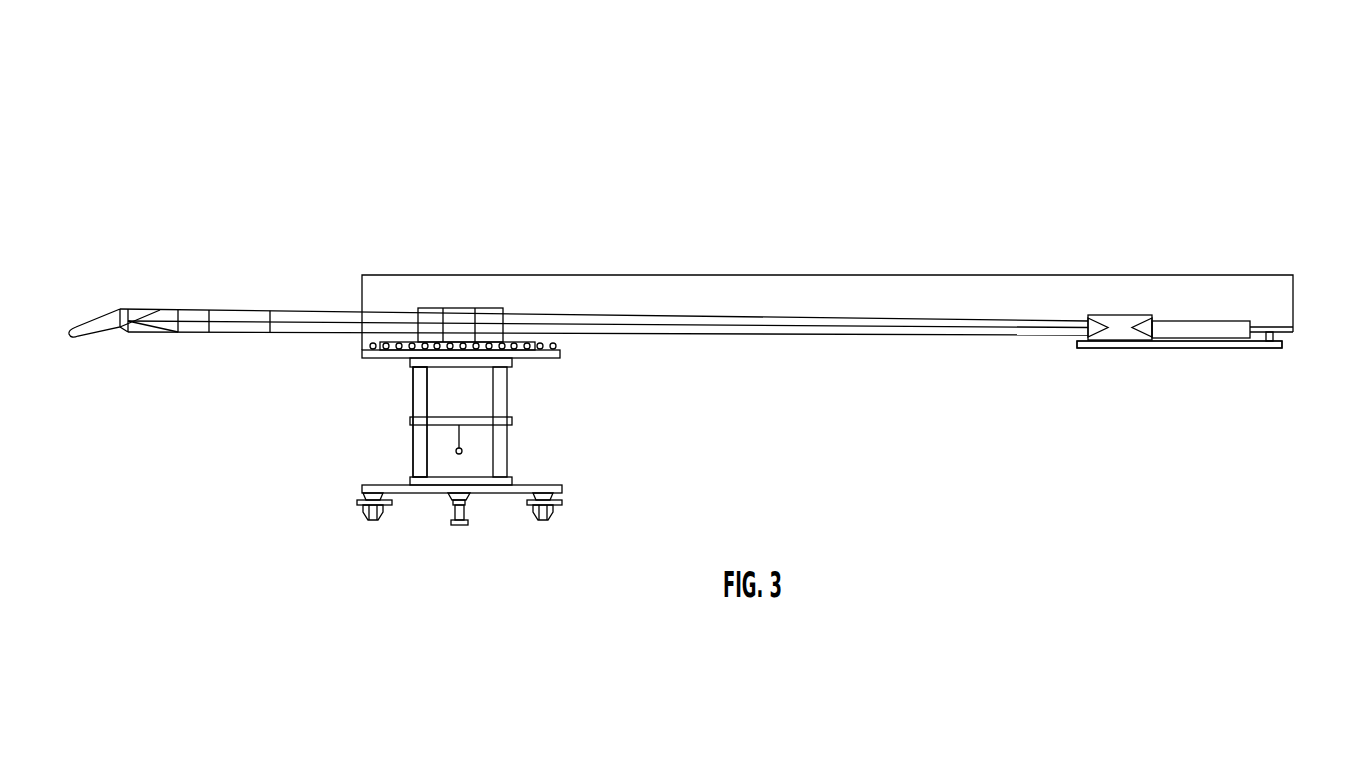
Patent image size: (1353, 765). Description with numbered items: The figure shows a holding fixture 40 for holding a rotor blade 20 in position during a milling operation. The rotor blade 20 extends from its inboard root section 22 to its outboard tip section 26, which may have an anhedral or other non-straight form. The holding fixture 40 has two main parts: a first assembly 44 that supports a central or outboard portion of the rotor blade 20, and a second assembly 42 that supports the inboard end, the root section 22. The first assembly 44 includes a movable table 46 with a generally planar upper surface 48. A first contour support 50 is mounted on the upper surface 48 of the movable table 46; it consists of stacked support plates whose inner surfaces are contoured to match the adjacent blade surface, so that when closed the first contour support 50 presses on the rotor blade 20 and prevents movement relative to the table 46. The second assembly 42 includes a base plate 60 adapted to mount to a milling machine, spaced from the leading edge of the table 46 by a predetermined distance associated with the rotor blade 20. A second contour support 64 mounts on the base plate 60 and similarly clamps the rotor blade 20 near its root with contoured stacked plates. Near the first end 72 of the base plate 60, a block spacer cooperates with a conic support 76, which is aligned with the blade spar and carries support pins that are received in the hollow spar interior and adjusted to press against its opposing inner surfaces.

The holding fixture 40 is at (307, 122).
The rotor blade 20 is at (257, 322).
The tip section 26 is at (160, 333).
The first assembly 44 is at (612, 428).
The movable table 46 is at (413, 447).
The upper surface 48 is at (520, 342).
The first contour support 50 is at (432, 325).
The second assembly 42 is at (1212, 437).
The second contour support 64 is at (1105, 315).
The root section 22 is at (1205, 330).
The conic support 76 is at (1263, 343).
The first end 72 is at (1283, 345).
The base plate 60 is at (1112, 348).